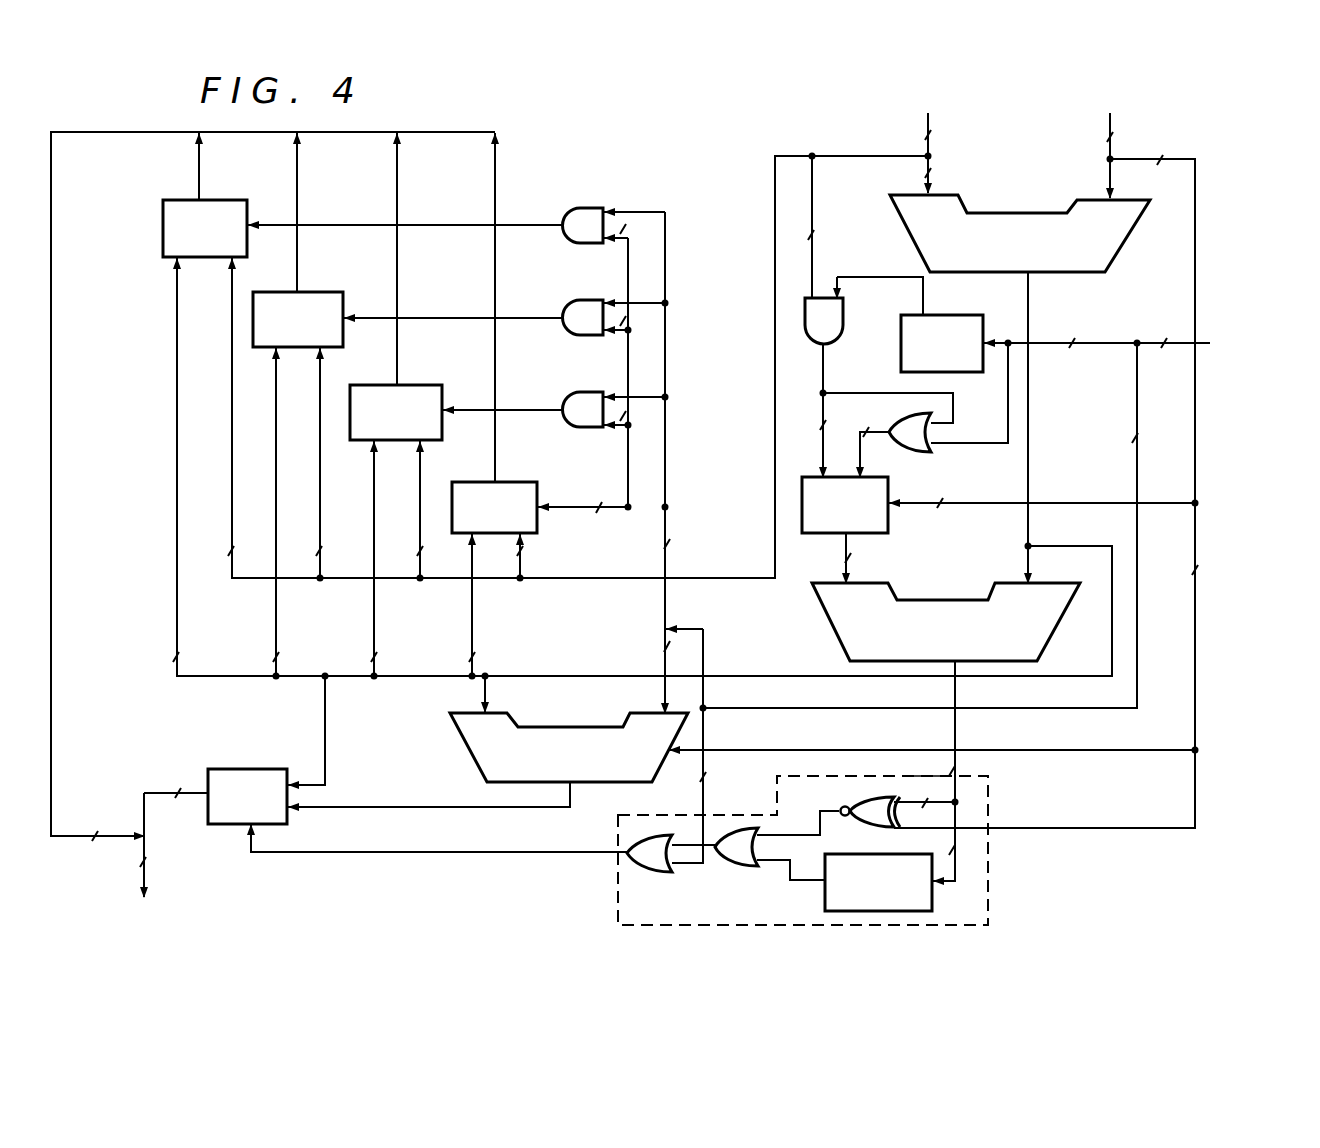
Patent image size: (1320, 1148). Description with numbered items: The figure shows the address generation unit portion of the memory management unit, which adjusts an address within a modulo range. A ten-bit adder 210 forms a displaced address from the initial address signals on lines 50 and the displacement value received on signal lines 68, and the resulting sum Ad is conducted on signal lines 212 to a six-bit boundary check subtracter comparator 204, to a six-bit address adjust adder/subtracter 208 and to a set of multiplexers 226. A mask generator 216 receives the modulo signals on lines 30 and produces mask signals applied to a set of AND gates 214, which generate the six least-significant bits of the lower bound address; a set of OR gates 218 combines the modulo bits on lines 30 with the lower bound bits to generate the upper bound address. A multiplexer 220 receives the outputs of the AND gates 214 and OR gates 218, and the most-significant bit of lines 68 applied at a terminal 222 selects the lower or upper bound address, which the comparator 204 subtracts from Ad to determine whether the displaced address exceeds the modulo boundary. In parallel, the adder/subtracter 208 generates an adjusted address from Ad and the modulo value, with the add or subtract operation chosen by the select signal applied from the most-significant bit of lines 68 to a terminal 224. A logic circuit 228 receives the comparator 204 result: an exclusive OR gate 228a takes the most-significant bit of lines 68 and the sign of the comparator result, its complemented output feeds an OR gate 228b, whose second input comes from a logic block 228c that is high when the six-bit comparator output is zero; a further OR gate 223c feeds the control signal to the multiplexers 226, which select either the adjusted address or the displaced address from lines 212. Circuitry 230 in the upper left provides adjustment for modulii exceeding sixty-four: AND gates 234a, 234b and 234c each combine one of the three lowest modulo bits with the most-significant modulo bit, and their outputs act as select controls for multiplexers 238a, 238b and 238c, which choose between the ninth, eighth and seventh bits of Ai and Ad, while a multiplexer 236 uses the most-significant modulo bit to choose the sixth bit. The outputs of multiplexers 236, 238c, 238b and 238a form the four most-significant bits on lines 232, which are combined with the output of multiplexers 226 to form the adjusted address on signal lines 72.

The address-adjustment circuitry 230 is at (541, 142).
The multiplexer 238a is at (228, 200).
The multiplexer 238b is at (314, 292).
The multiplexer 238c is at (424, 385).
The multiplexer 236 is at (526, 482).
The AND gate 234a is at (572, 208).
The AND gate 234b is at (572, 300).
The AND gate 234c is at (572, 390).
The lines 50 is at (923, 131).
The signal lines 68 is at (1105, 132).
The ten-bit adder 210 is at (1123, 266).
The AND gates 214 is at (846, 314).
The mask generator 216 is at (950, 315).
The lines 30 is at (1144, 343).
The OR gates 218 is at (919, 454).
The multiplexer 220 is at (885, 535).
The terminal 222 is at (947, 512).
The signal lines 212 is at (1030, 454).
The six-bit boundary check subtracter comparator 204 is at (954, 590).
The multiplexers 226 is at (246, 766).
The lines 232 is at (72, 832).
The signal lines 72 is at (150, 880).
The six-bit address adjust adder/subtracter 208 is at (450, 740).
The terminal 224 is at (690, 755).
The logic circuit 228 is at (996, 792).
The exclusive OR gate 228a is at (855, 798).
The OR gate 228b is at (745, 864).
The OR gate 223c is at (648, 872).
The logic block 228c is at (824, 902).